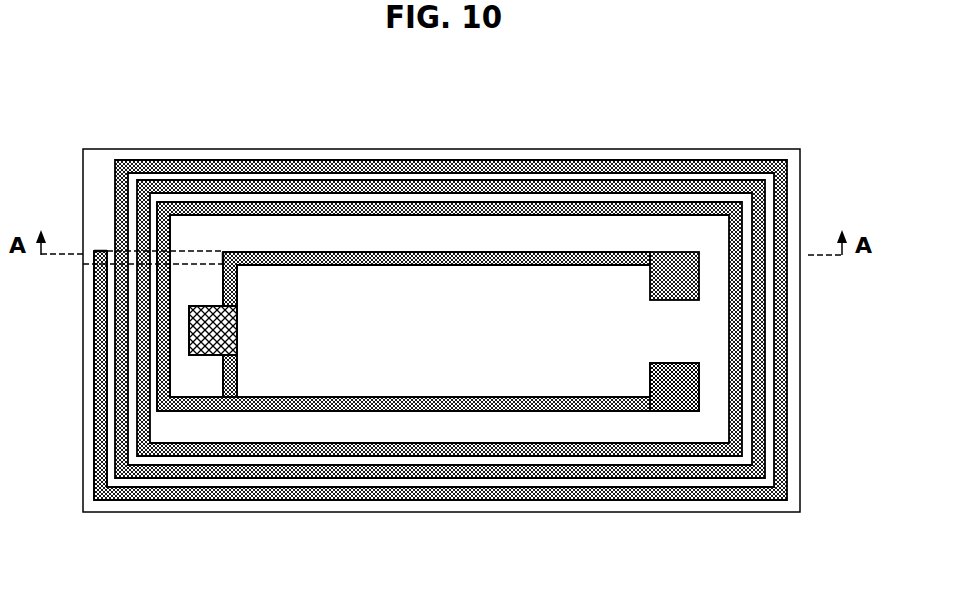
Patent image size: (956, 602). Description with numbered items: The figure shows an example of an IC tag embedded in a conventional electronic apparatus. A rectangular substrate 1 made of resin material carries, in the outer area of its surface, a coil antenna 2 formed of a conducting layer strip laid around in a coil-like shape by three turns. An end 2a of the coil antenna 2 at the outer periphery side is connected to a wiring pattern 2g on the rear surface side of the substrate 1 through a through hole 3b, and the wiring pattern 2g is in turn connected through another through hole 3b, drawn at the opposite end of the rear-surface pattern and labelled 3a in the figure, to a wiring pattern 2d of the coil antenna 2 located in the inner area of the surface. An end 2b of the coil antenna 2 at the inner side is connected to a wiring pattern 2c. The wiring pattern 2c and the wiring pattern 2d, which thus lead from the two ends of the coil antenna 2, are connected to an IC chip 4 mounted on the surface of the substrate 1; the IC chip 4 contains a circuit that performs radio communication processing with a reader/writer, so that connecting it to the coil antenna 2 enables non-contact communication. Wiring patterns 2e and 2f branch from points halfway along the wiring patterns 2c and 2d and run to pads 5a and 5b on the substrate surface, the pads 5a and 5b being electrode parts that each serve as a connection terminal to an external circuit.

The substrate 1 is at (322, 513).
The coil antenna 2 is at (388, 160).
The end of the coil antenna at the outer periphery side 2a is at (104, 251).
The end of the coil antenna at the inner side 2b is at (163, 420).
The wiring pattern 2c is at (240, 386).
The wiring pattern 2d is at (240, 291).
The wiring pattern 2e is at (455, 399).
The wiring pattern 2f is at (453, 264).
The wiring pattern at the rear surface side 2g is at (186, 257).
The outer end of coil antenna 3a is at (98, 259).
The through hole 3b is at (231, 257).
The IC chip 4 is at (238, 331).
The pad 5a is at (677, 402).
The pad 5b is at (680, 263).